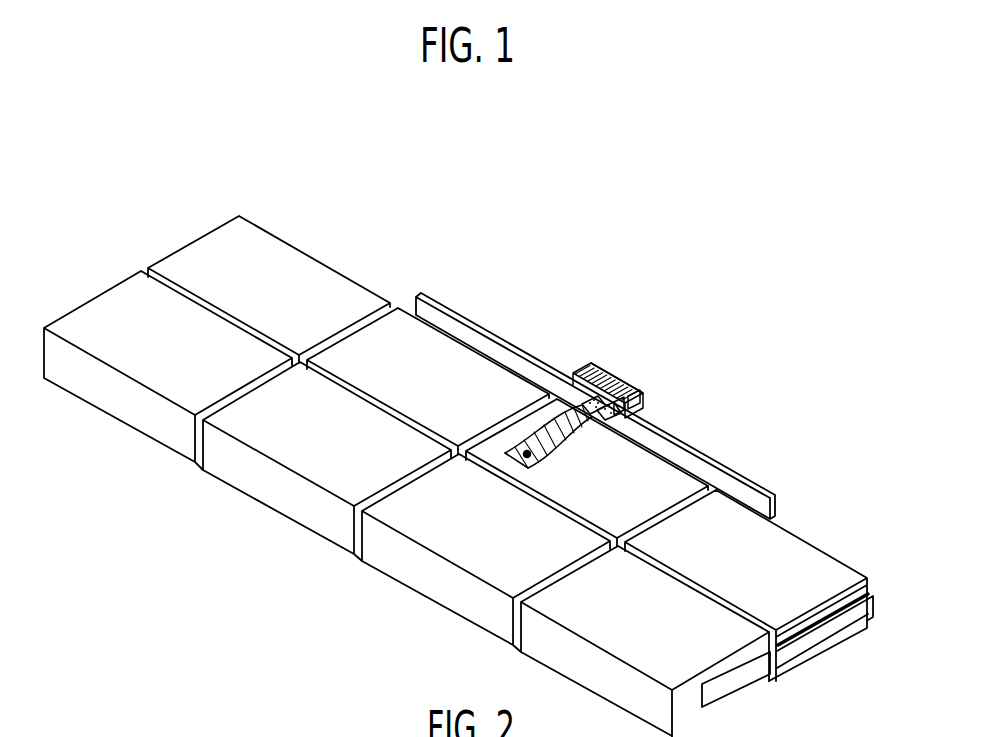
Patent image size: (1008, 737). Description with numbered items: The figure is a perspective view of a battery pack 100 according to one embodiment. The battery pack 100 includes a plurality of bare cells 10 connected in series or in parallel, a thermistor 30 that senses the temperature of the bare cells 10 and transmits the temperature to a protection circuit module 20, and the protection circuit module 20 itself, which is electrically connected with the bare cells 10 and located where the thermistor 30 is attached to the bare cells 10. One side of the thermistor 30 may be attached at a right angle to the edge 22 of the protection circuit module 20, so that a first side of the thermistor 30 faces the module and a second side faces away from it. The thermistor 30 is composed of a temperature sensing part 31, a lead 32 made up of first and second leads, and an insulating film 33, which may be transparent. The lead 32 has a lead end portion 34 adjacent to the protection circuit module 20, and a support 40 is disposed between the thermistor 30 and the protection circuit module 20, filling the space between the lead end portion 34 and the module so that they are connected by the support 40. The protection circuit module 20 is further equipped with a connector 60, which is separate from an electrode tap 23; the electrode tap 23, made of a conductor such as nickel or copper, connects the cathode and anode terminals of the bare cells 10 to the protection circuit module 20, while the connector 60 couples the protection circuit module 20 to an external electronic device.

The battery pack 100 is at (329, 152).
The bare cells 10 is at (325, 259).
The protection circuit module 20 is at (763, 462).
The edge 22 is at (592, 368).
The electrode tap 23 is at (727, 685).
The thermistor 30 is at (615, 299).
The temperature sensing part 31 is at (527, 455).
The lead 32 is at (543, 445).
The insulating film 33 is at (561, 407).
The lead end portion 34 is at (593, 402).
The support 40 is at (640, 418).
The connector 60 is at (641, 385).